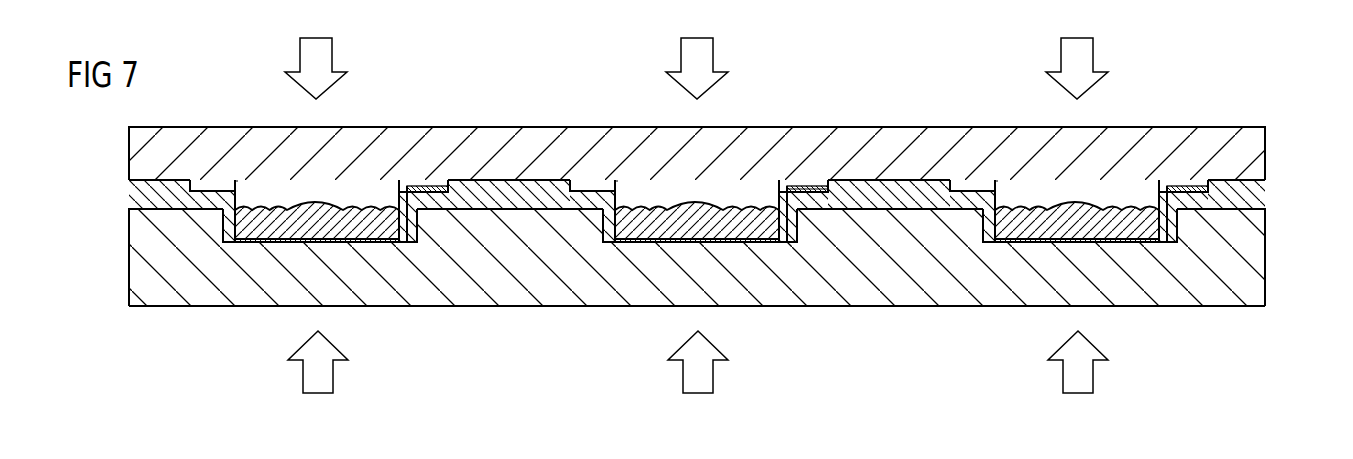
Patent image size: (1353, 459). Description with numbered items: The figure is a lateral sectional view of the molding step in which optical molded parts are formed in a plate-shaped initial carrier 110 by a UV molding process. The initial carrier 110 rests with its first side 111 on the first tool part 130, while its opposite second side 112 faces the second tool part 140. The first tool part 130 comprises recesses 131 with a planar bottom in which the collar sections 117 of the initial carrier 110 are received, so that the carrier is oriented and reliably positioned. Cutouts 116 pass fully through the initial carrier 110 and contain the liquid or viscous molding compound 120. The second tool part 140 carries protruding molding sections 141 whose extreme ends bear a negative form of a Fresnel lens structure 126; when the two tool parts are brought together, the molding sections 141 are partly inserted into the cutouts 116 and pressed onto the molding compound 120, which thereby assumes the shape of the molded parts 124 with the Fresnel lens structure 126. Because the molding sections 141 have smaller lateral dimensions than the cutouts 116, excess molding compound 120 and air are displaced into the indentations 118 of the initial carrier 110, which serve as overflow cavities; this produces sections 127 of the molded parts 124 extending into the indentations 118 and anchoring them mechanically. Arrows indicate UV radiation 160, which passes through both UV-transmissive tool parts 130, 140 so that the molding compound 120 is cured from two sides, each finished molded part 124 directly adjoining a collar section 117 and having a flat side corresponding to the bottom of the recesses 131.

The initial carrier 110 is at (1252, 197).
The first side 111 is at (1220, 228).
The second side 112 is at (1222, 175).
The cutouts 116 is at (285, 202).
The collar sections 117 is at (422, 240).
The indentations 118 is at (215, 185).
The molding compound 120 is at (731, 144).
The optical molded parts 124 is at (373, 185).
The Fresnel lens structure 126 is at (750, 185).
The sections 127 is at (812, 187).
The first tool part 130 is at (168, 280).
The recesses 131 is at (303, 242).
The second tool part 140 is at (167, 150).
The molding sections 141 is at (330, 192).
The UV radiation 160 is at (688, 57).